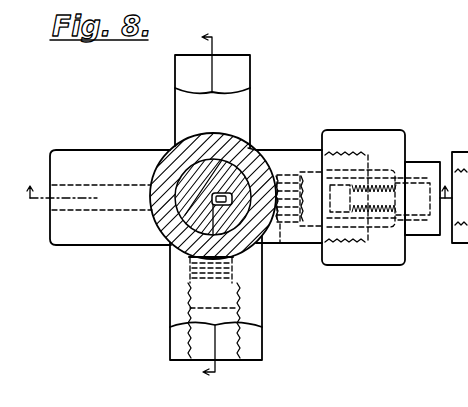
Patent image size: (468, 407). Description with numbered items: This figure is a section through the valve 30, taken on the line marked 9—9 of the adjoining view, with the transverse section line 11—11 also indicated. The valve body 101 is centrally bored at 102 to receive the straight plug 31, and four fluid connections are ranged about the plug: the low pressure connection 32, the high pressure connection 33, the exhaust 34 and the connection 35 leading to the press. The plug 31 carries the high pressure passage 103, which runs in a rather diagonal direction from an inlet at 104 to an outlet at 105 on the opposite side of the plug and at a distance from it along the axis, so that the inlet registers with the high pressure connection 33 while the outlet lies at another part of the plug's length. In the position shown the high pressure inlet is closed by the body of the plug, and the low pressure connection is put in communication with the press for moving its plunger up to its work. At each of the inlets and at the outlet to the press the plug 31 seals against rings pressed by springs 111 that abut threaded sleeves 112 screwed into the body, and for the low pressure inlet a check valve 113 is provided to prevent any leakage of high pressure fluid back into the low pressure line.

The section line 9- 9 is at (235, 197).
The section line 11- 11 is at (196, 208).
The valve 30 is at (176, 150).
The plug 31 is at (249, 147).
The low pressure connection 32 is at (312, 244).
The high pressure connection 33 is at (178, 100).
The exhaust 34 is at (60, 171).
The connection to the press 35 is at (252, 312).
The valve body 101 is at (255, 150).
The central bore 102 is at (180, 243).
The high pressure passage 103 is at (192, 258).
The inlet of the high pressure passage 104 is at (230, 100).
The outlet of the high pressure passage 105 is at (186, 326).
The spring 111 is at (281, 245).
The threaded sleeve 112 is at (326, 150).
The check valve 113 is at (409, 163).